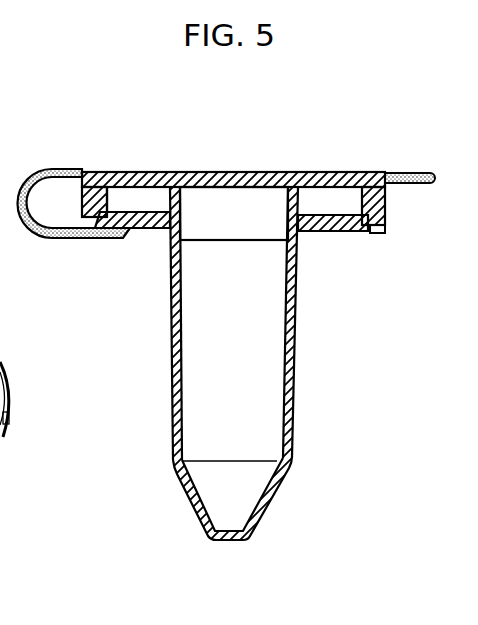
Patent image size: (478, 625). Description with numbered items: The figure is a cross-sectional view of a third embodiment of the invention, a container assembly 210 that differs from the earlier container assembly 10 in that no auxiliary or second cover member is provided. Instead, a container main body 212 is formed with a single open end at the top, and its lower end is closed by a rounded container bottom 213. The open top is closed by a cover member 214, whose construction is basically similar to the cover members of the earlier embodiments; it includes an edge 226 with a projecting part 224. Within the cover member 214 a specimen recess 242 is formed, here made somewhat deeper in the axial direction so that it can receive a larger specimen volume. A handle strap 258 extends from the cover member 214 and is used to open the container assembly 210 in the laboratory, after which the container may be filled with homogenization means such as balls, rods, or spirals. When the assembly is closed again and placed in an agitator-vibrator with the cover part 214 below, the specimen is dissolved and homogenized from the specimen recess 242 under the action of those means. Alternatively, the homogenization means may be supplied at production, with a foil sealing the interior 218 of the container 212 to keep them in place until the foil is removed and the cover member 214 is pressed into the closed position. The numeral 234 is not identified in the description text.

The container assembly 10 is at (18, 26).
The container assembly 210 is at (234, 186).
The container main body 212 is at (231, 363).
The container bottom 213 is at (186, 485).
The cover member 214 is at (253, 166).
The interior 218 is at (274, 385).
The projecting part 224 is at (150, 229).
The edge 226 is at (386, 214).
The recess 234 is at (138, 198).
The specimen recess 242 is at (180, 203).
The handle strap 258 is at (404, 173).